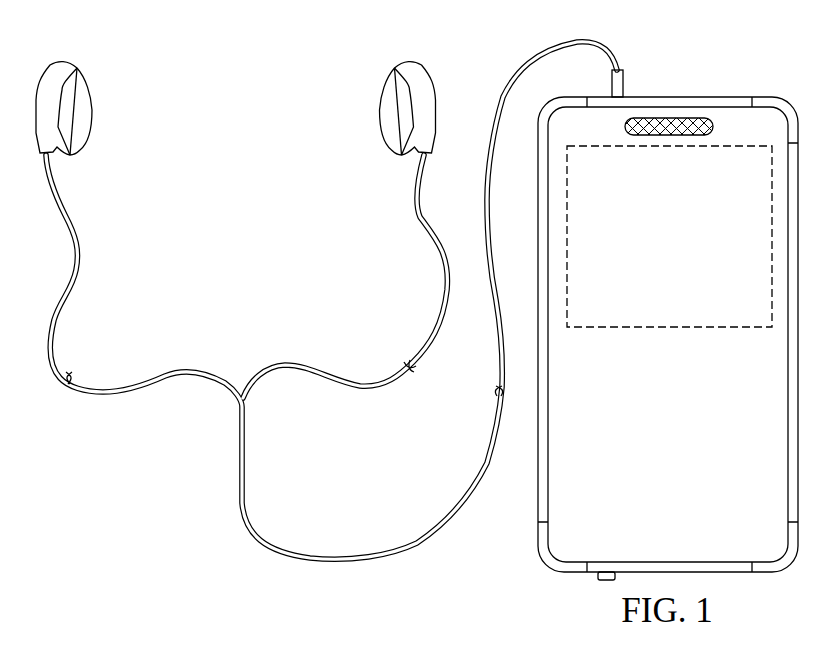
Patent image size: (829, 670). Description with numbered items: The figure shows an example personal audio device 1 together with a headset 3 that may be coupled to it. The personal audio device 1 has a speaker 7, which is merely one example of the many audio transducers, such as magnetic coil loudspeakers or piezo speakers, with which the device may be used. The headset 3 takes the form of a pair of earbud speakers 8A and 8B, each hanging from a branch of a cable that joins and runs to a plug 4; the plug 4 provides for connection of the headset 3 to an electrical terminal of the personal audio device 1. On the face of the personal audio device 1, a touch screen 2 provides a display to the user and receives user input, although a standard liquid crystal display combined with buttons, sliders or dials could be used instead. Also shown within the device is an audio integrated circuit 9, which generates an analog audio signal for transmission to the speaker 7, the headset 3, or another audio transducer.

The personal audio device 1 is at (740, 92).
The touch screen 2 is at (662, 473).
The headset 3 is at (197, 370).
The plug 4 is at (624, 86).
The speaker 7 is at (680, 118).
The earbud speaker 8A is at (399, 63).
The earbud speaker 8B is at (72, 63).
The audio integrated circuit 9 is at (687, 328).